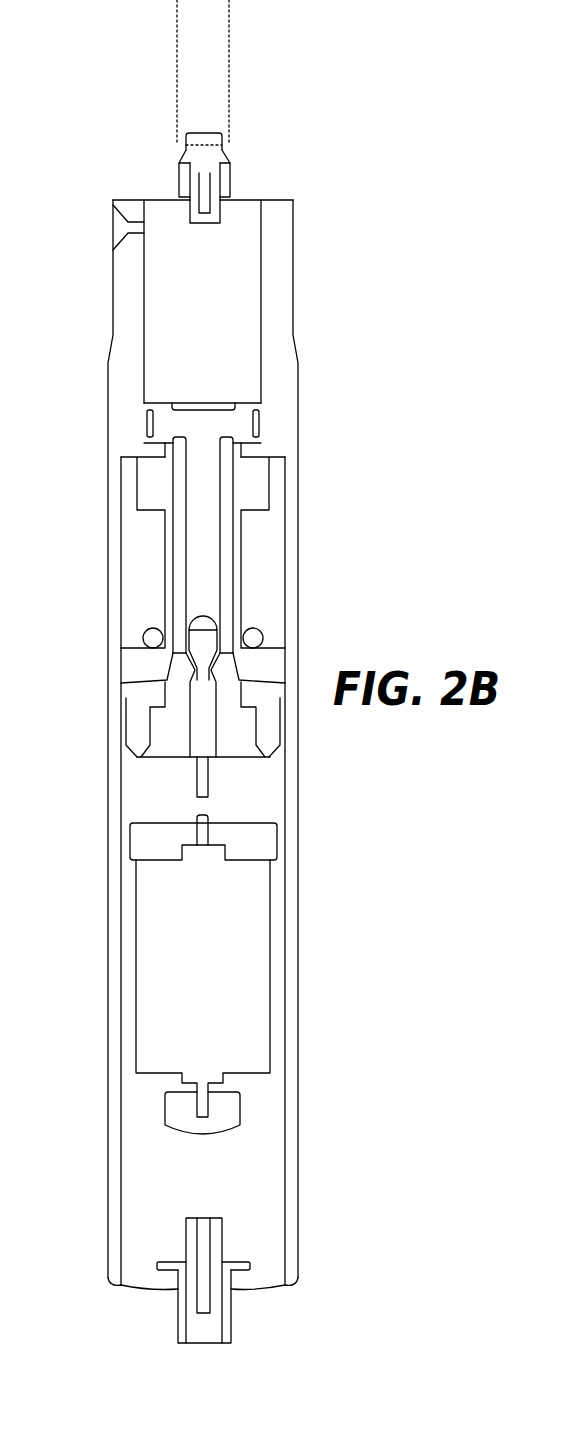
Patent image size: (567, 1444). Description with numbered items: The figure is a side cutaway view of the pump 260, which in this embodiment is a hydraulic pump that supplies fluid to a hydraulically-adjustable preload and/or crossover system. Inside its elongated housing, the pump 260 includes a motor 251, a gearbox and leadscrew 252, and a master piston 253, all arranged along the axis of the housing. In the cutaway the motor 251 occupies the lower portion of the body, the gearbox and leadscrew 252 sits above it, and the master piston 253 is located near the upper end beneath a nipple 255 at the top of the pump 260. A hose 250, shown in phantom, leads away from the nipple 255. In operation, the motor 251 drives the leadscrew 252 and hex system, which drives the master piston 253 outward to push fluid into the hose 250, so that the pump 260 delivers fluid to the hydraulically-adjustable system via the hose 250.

The hose 250 is at (177, 85).
The nipple 255 is at (180, 183).
The master piston 253 is at (147, 428).
The gearbox and leadscrew 252 is at (128, 687).
The pump 260 is at (107, 848).
The motor 251 is at (148, 975).